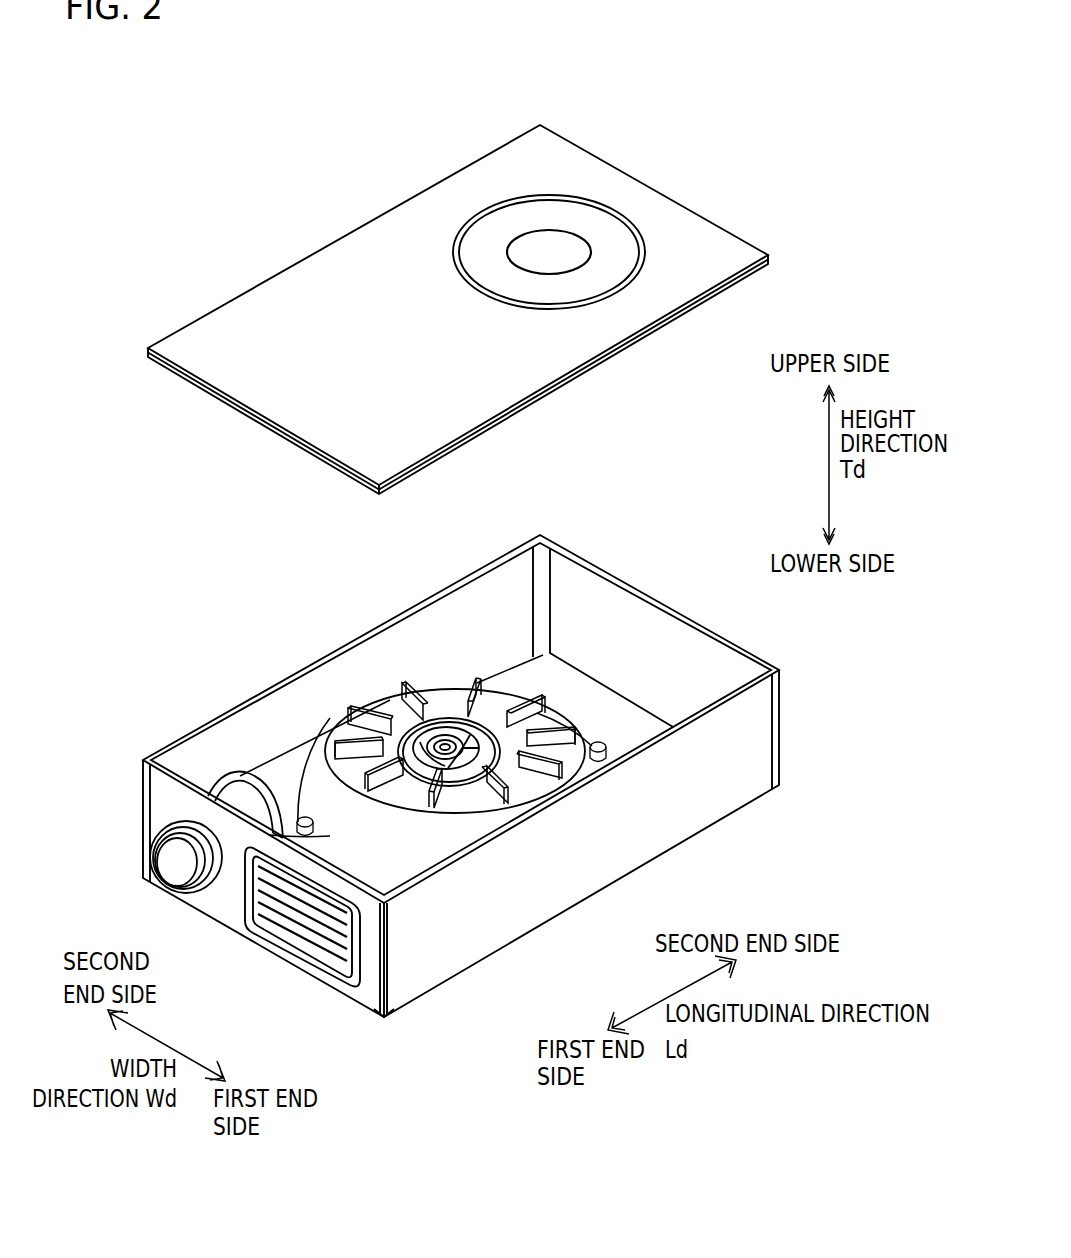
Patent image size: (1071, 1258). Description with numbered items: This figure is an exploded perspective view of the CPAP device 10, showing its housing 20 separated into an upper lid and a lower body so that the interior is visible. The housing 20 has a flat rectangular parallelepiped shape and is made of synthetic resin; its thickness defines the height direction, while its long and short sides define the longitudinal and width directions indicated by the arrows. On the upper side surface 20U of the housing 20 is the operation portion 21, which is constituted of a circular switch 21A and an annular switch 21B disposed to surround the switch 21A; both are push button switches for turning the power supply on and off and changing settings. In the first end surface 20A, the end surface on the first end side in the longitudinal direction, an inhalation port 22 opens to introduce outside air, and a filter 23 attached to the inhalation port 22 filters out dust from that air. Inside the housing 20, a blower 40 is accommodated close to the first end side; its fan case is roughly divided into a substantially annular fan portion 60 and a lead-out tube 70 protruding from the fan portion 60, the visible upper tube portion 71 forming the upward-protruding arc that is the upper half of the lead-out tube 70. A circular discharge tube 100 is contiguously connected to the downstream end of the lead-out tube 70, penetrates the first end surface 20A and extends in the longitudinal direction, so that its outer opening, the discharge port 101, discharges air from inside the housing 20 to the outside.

The CPAP device 10 is at (163, 161).
The housing 20 is at (236, 252).
The upper side surface 20U is at (368, 245).
The first end surface 20A is at (368, 1000).
The operation portion 21 is at (686, 97).
The switch 21A is at (549, 250).
The switch 21B is at (603, 233).
The inhalation port 22 is at (277, 954).
The filter 23 is at (297, 967).
The blower 40 is at (427, 674).
The fan portion 60 is at (468, 836).
The lead-out tube 70 is at (285, 765).
The upper tube portion 71 is at (285, 753).
The discharge tube 100 is at (222, 792).
The discharge port 101 is at (166, 882).